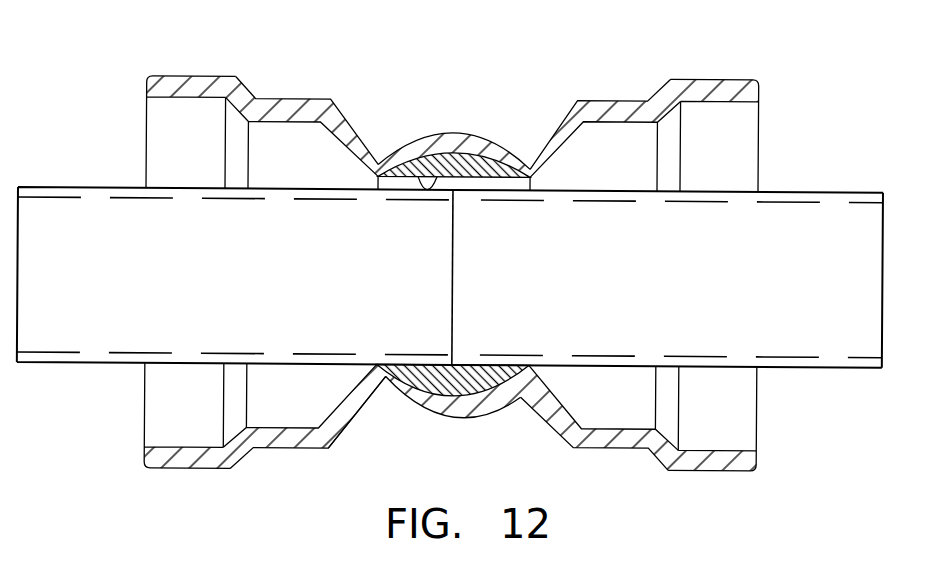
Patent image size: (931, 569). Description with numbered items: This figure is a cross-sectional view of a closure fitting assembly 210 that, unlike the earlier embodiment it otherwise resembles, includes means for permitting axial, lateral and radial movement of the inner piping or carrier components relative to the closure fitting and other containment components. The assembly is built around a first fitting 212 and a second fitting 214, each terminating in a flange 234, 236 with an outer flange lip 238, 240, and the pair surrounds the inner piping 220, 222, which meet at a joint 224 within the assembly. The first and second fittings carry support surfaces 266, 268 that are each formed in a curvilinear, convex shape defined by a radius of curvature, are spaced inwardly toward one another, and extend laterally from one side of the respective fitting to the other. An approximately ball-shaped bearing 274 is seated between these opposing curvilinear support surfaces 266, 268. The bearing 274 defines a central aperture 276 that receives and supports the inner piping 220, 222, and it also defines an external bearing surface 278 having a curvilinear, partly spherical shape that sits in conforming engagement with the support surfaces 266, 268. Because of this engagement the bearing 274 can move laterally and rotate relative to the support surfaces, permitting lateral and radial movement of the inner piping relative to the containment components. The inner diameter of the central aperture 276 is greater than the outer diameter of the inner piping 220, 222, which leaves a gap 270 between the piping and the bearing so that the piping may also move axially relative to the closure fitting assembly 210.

The closure fitting assembly 210 is at (587, 88).
The first fitting 212 is at (323, 447).
The second fitting 214 is at (318, 96).
The inner piping 220 is at (100, 186).
The inner piping 222 is at (788, 187).
The joint 224 is at (456, 287).
The flange 234 is at (201, 73).
The flange 236 is at (692, 75).
The flange lip 238 is at (180, 95).
The flange lip 240 is at (730, 96).
The support surface 266 is at (377, 395).
The support surface 268 is at (457, 149).
The gap 270 is at (378, 182).
The bearing 274 is at (422, 365).
The central aperture 276 is at (412, 165).
The external bearing surface 278 is at (485, 395).